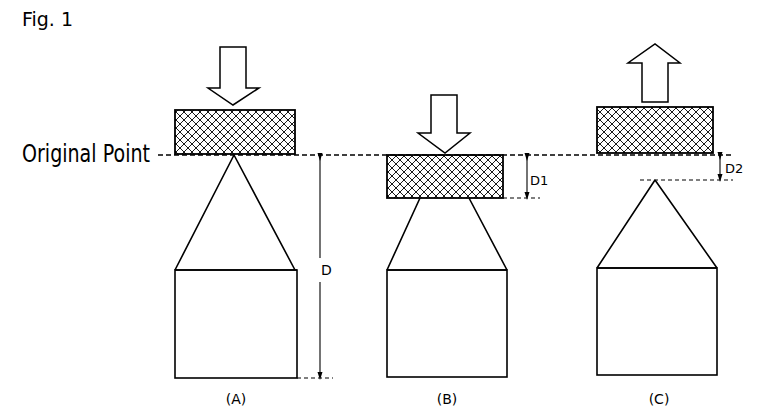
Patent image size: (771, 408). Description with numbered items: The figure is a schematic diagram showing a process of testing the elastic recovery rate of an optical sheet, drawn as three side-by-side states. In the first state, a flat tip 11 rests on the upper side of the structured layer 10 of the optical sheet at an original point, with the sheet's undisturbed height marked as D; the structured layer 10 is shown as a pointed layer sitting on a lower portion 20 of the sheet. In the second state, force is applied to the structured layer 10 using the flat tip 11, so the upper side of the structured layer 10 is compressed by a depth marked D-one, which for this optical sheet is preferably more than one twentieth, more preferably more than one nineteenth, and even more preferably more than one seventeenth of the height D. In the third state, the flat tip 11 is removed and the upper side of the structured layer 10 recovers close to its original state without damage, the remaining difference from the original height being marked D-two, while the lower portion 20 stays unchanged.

The structured layer 10 is at (200, 236).
The flat tip 11 is at (597, 126).
The base / support block 20 is at (178, 330).